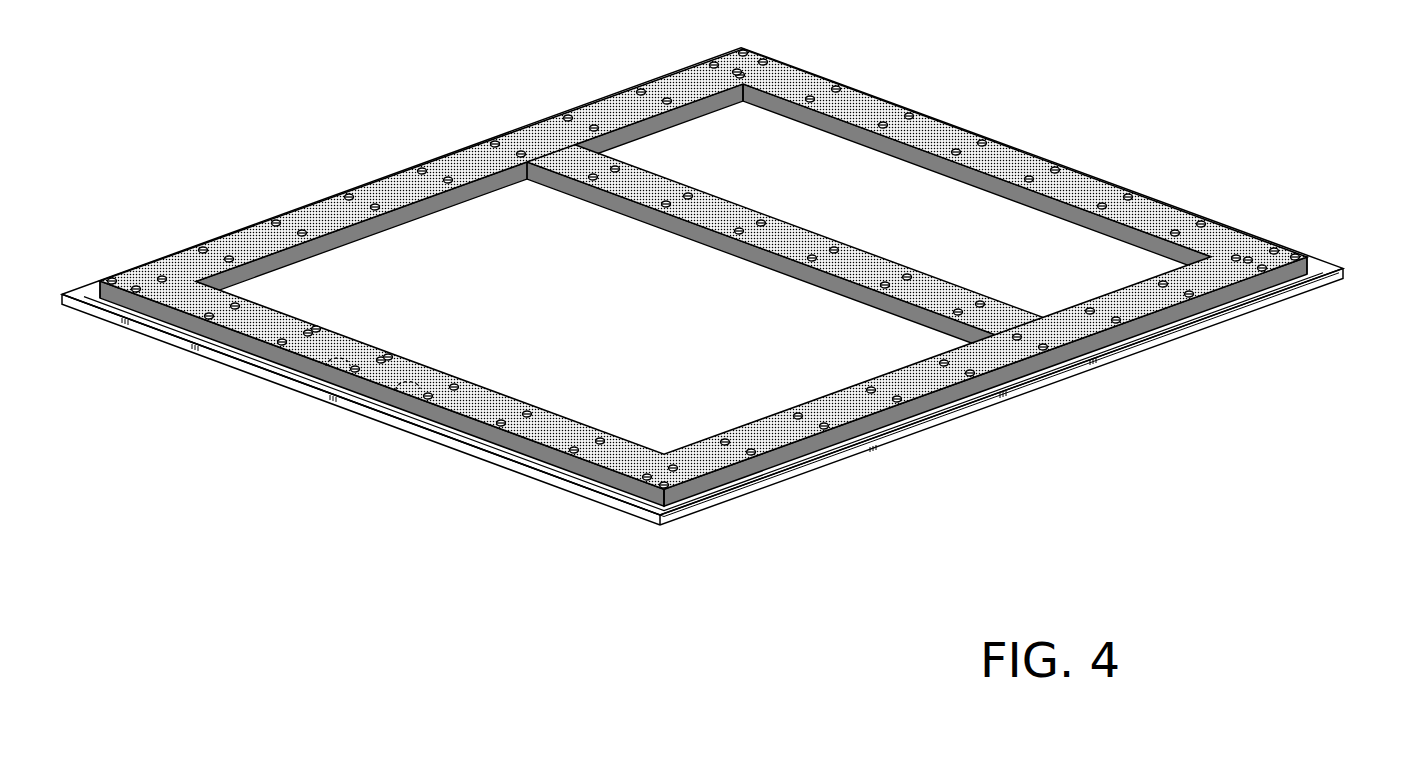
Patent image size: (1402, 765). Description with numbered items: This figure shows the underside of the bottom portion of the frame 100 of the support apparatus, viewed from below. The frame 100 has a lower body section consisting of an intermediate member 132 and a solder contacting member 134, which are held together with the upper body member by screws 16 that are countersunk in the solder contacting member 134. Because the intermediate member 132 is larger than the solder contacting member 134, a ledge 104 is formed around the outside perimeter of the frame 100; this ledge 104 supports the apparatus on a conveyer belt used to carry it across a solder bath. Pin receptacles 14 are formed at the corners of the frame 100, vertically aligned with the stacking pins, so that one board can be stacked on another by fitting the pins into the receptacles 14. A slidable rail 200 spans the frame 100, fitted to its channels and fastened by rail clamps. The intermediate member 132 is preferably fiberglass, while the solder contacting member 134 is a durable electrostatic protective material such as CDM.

The pin receptacle 14 is at (746, 50).
The screw 16 is at (316, 328).
The frame 100 is at (1213, 325).
The second ledge 104 is at (1322, 268).
The intermediate member 132 is at (862, 448).
The solder contacting member 134 is at (815, 400).
The slidable rail 200 is at (701, 255).